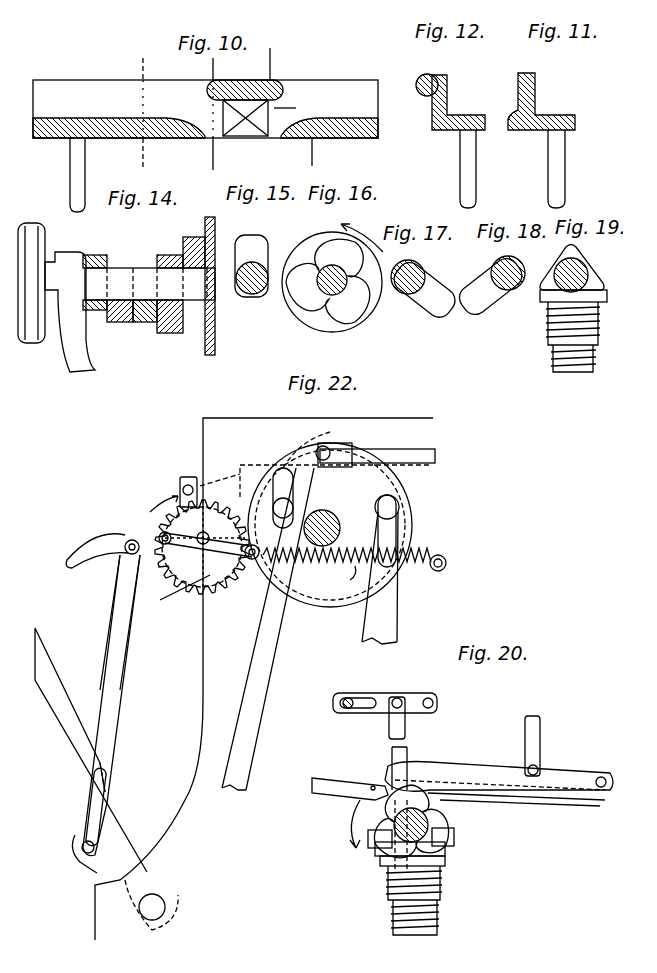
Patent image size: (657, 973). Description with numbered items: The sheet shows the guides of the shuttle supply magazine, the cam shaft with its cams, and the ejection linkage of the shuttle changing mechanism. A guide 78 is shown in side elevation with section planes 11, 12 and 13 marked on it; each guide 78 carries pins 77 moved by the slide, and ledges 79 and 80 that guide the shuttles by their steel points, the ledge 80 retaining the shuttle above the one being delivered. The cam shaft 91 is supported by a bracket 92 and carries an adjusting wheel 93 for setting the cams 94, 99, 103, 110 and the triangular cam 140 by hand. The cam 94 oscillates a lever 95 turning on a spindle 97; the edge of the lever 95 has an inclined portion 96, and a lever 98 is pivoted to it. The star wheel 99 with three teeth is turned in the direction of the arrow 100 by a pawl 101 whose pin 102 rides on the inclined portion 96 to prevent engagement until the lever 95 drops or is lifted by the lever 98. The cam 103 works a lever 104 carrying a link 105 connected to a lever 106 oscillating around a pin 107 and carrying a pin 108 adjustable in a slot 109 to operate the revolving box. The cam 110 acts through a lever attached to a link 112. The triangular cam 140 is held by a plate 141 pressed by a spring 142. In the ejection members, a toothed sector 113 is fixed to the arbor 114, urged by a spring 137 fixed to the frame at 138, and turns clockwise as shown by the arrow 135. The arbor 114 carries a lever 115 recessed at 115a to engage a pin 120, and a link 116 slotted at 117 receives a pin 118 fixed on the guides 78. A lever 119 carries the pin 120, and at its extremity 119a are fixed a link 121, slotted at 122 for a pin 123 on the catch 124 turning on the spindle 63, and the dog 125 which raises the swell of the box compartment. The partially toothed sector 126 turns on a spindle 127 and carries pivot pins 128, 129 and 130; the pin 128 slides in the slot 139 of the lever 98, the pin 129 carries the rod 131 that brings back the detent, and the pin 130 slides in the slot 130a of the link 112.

In FIG. 10, the section plane 11— 11 is at (135, 112).
In FIG. 10, the section plane 12— 12 is at (203, 112).
In FIG. 10, the section plane 13— 13 is at (300, 101).
In FIG. 22, the spindle 63 is at (139, 910).
In FIG. 10, the pin 77 is at (87, 175).
In FIG. 12, the pin 77 is at (457, 169).
In FIG. 11, the pin 77 is at (545, 169).
In FIG. 10, the guide 78 is at (205, 109).
In FIG. 12, the guide 78 is at (458, 116).
In FIG. 11, the guide 78 is at (543, 112).
In FIG. 22, the guide 78 is at (256, 455).
In FIG. 11, the ledge 79 is at (516, 112).
In FIG. 10, the ledge 80 is at (272, 80).
In FIG. 12, the ledge 80 is at (421, 83).
In FIG. 14, the cam shaft 91 is at (150, 284).
In FIG. 15, the cam shaft 91 is at (252, 292).
In FIG. 16, the cam shaft 91 is at (348, 284).
In FIG. 17, the cam shaft 91 is at (420, 268).
In FIG. 18, the cam shaft 91 is at (524, 272).
In FIG. 20, the cam shaft 91 is at (432, 824).
In FIG. 14, the bracket 92 is at (70, 312).
In FIG. 14, the adjusting wheel 93 is at (31, 343).
In FIG. 14, the cam 94 is at (199, 286).
In FIG. 15, the cam 94 is at (251, 266).
In FIG. 20, the cam 94 is at (410, 790).
In FIG. 20, the lever 95 is at (500, 777).
In FIG. 20, the inclined portion 96 is at (450, 762).
In FIG. 20, the spindle 97 is at (595, 782).
In FIG. 22, the lever 98 is at (380, 578).
In FIG. 20, the lever 98 is at (540, 738).
In FIG. 14, the star wheel 99 is at (170, 333).
In FIG. 16, the star wheel 99 is at (332, 282).
In FIG. 20, the star wheel 99 is at (391, 821).
In FIG. 16, the arrow 100 is at (360, 234).
In FIG. 20, the arrow 100 is at (340, 852).
In FIG. 20, the pawl 101 is at (335, 789).
In FIG. 20, the pin 102 is at (372, 786).
In FIG. 14, the cam 103 is at (108, 322).
In FIG. 18, the cam 103 is at (491, 287).
In FIG. 20, the cam 103 is at (368, 838).
In FIG. 20, the lever 104 is at (516, 797).
In FIG. 20, the link 105 is at (390, 730).
In FIG. 20, the lever 106 is at (415, 693).
In FIG. 20, the pin 107 is at (434, 703).
In FIG. 20, the pin 108 is at (348, 698).
In FIG. 20, the slot 109 is at (372, 696).
In FIG. 14, the cam 110 is at (136, 322).
In FIG. 17, the cam 110 is at (424, 290).
In FIG. 20, the cam 110 is at (445, 852).
In FIG. 22, the link 112 is at (252, 705).
In FIG. 22, the toothed sector 113 is at (190, 552).
In FIG. 22, the arbor 114 is at (205, 545).
In FIG. 22, the lever 115 is at (178, 488).
In FIG. 22, the recess 115a is at (179, 596).
In FIG. 22, the link 116 is at (218, 476).
In FIG. 22, the slot 117 is at (325, 447).
In FIG. 22, the pin 118 is at (285, 468).
In FIG. 22, the lever 119 is at (132, 538).
In FIG. 22, the extremity 119a is at (125, 553).
In FIG. 22, the pin 120 is at (202, 551).
In FIG. 22, the link 121 is at (115, 718).
In FIG. 22, the slot 122 is at (92, 800).
In FIG. 22, the pin 123 is at (82, 847).
In FIG. 22, the catch 124 is at (52, 675).
In FIG. 22, the dog 125 is at (93, 547).
In FIG. 22, the partially toothed sector 126 is at (347, 571).
In FIG. 22, the spindle 127 is at (335, 514).
In FIG. 22, the pivot pin 128 is at (397, 507).
In FIG. 22, the pivot pin 129 is at (340, 446).
In FIG. 22, the pivot pin 130 is at (292, 496).
In FIG. 22, the slot 130a is at (330, 525).
In FIG. 22, the rod 131 is at (393, 448).
In FIG. 22, the arrow 135 is at (148, 498).
In FIG. 22, the spring 137 is at (346, 584).
In FIG. 22, the frame fixing point 138 is at (444, 552).
In FIG. 22, the slot 139 is at (409, 531).
In FIG. 14, the triangular cam 140 is at (100, 257).
In FIG. 19, the triangular cam 140 is at (580, 253).
In FIG. 20, the triangular cam 140 is at (454, 838).
In FIG. 19, the plate 141 is at (542, 300).
In FIG. 20, the plate 141 is at (382, 864).
In FIG. 19, the spring 142 is at (550, 343).
In FIG. 20, the spring 142 is at (442, 890).